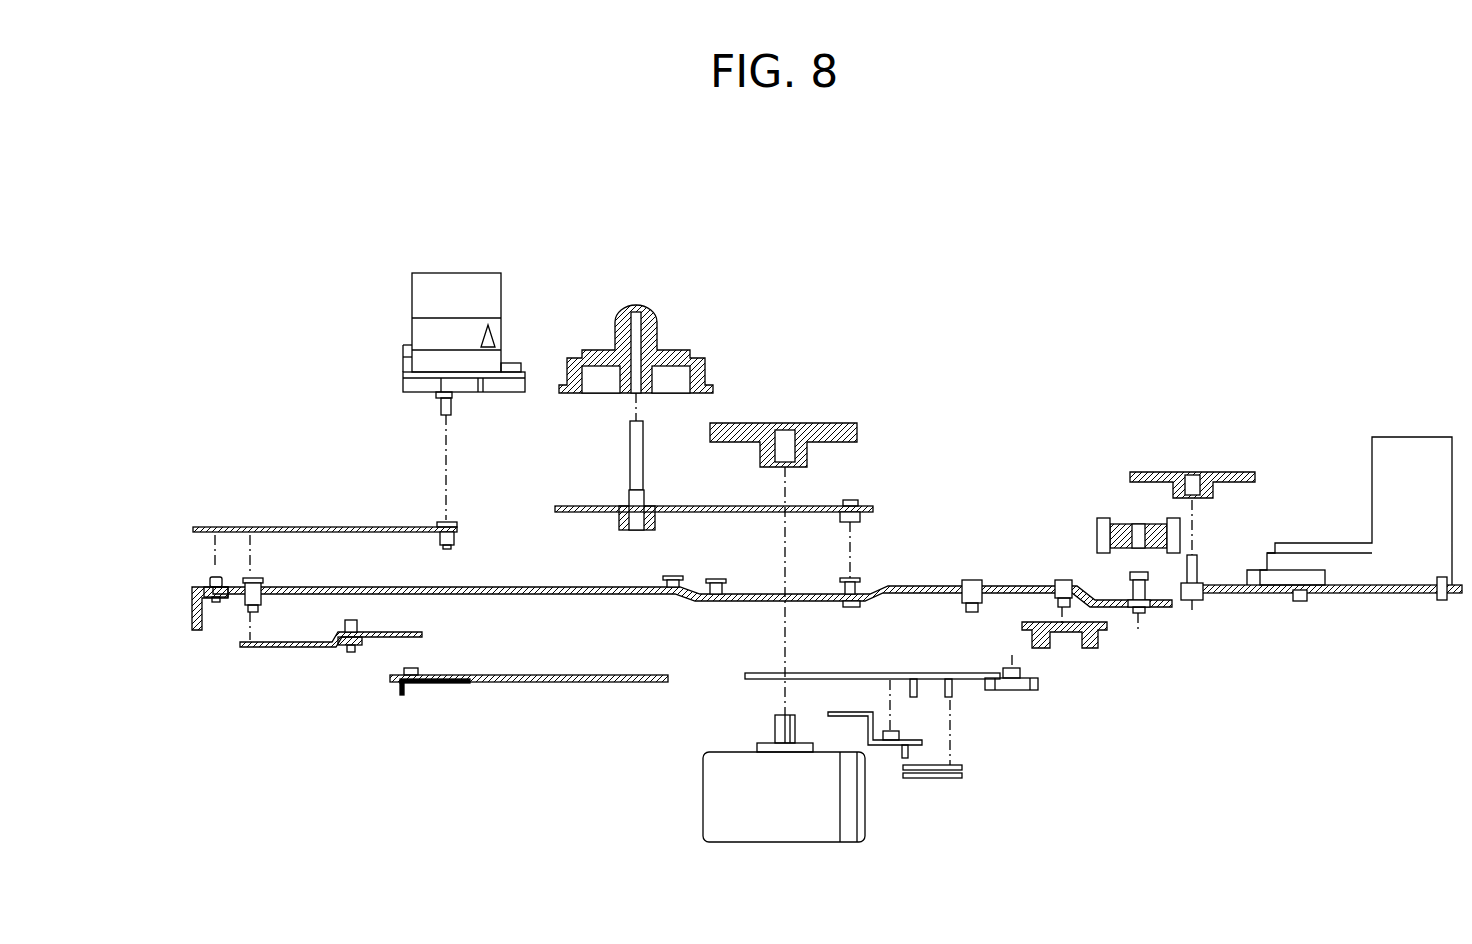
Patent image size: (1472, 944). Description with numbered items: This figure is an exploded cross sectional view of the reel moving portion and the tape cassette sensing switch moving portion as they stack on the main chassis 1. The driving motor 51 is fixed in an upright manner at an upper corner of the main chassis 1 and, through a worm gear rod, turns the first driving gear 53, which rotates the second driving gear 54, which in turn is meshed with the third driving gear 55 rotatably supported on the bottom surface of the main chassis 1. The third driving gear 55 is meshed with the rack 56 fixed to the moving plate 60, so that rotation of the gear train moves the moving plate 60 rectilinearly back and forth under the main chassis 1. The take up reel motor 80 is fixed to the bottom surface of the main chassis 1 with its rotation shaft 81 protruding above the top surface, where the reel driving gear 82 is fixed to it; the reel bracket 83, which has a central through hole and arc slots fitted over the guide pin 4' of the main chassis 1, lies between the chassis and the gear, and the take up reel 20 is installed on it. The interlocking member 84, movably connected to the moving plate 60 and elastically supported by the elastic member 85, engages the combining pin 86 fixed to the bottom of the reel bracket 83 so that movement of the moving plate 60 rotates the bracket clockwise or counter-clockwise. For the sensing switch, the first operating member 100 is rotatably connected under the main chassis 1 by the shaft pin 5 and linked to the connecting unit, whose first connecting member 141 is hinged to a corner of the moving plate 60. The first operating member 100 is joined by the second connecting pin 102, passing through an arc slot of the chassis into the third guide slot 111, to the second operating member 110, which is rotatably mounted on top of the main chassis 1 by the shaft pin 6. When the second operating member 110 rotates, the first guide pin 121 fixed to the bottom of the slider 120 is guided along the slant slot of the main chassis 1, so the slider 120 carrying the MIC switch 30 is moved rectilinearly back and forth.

The main chassis 1 is at (192, 608).
The guide pin 4' is at (882, 567).
The shaft pin 5 is at (350, 655).
The shaft pin 6 is at (209, 582).
The take up reel 20 is at (690, 348).
The MIC switch 30 is at (453, 272).
The driving motor 51 is at (1412, 437).
The first driving gear 53 is at (1243, 472).
The second driving gear 54 is at (1097, 538).
The third driving gear 55 is at (1097, 640).
The rack 56 is at (1020, 688).
The moving plate 60 is at (580, 683).
The take up reel motor 80 is at (788, 843).
The rotation shaft 81 is at (775, 727).
The reel driving gear 82 is at (836, 423).
The reel bracket 83 is at (830, 506).
The interlocking member 84 is at (925, 730).
The elastic member 85 is at (945, 780).
The combining pin 86 is at (852, 522).
The first operating member 100 is at (290, 648).
The second connecting pin 102 is at (247, 606).
The second operating member 110 is at (345, 527).
The third guide slot 111 is at (250, 527).
The slider 120 is at (403, 358).
The first guide pin 121 is at (457, 538).
The first connecting member 141 is at (405, 692).